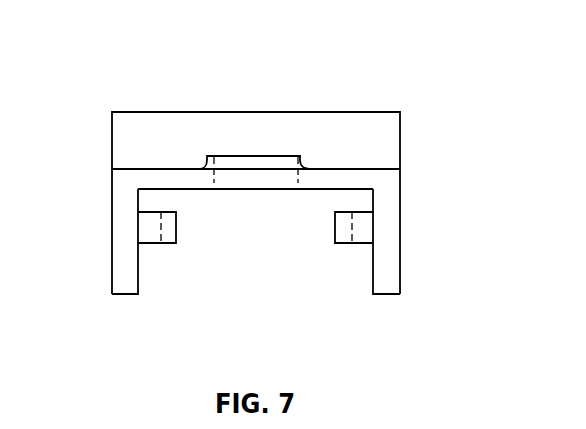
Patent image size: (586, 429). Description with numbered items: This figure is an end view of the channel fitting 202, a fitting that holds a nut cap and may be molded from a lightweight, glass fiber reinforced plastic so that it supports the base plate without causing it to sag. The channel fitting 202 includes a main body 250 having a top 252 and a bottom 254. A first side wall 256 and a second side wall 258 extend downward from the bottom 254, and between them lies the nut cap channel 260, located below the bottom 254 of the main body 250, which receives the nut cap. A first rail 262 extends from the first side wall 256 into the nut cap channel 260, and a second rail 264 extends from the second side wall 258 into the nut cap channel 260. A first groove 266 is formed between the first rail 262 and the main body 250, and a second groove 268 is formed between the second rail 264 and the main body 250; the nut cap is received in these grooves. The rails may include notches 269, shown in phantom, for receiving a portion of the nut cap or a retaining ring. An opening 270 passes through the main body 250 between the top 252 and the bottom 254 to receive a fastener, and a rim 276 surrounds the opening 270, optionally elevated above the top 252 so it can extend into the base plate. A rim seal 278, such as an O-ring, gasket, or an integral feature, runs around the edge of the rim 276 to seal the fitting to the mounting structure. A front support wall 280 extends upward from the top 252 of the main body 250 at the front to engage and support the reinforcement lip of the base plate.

The channel fitting 202 is at (172, 74).
The main body 250 is at (313, 178).
The top 252 is at (360, 165).
The bottom 254 is at (263, 192).
The first side wall 256 is at (123, 250).
The second side wall 258 is at (390, 258).
The nut cap channel 260 is at (210, 238).
The first rail 262 is at (145, 232).
The second rail 264 is at (362, 243).
The first groove 266 is at (157, 204).
The second groove 268 is at (356, 203).
The notches 269 is at (343, 232).
The opening 270 is at (267, 154).
The rim 276 is at (205, 163).
The rim seal 278 is at (214, 156).
The front support wall 280 is at (375, 110).